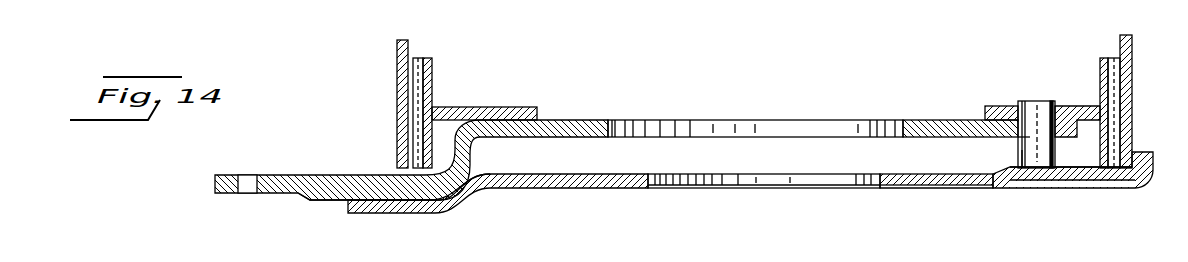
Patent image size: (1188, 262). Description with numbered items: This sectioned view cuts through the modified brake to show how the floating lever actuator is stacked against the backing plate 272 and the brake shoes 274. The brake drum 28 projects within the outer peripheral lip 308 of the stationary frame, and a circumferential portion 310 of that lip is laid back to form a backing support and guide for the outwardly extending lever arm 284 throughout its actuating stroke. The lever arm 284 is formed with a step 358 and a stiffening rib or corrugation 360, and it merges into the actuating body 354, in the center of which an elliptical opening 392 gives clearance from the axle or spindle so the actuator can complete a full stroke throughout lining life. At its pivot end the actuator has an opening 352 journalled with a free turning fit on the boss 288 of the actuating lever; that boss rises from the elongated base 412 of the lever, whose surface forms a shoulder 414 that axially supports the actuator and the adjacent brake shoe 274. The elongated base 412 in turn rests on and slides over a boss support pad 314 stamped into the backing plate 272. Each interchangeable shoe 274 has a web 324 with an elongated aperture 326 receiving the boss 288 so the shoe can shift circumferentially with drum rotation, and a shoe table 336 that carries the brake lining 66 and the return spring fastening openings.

The brake drum 28 is at (397, 62).
The brake linings 66 is at (418, 58).
The brake shoe table 336 is at (431, 79).
The brake shoes 274 is at (462, 92).
The web 324 is at (510, 107).
The elliptical opening 392 is at (615, 120).
The lever arm 284 is at (275, 193).
The stiffening rib 360 is at (325, 201).
The circumferential portion of lip 310 is at (407, 213).
The step 358 is at (477, 190).
The actuating body 354 is at (913, 120).
The elongated aperture 326 is at (1018, 104).
The boss 288 is at (1035, 101).
The opening 352 is at (1058, 117).
The shoulder 414 is at (1022, 136).
The elongated base 412 is at (1025, 158).
The backing plate 272 is at (987, 188).
The boss support pads 314 is at (1072, 188).
The outer peripheral lip 308 is at (1143, 152).